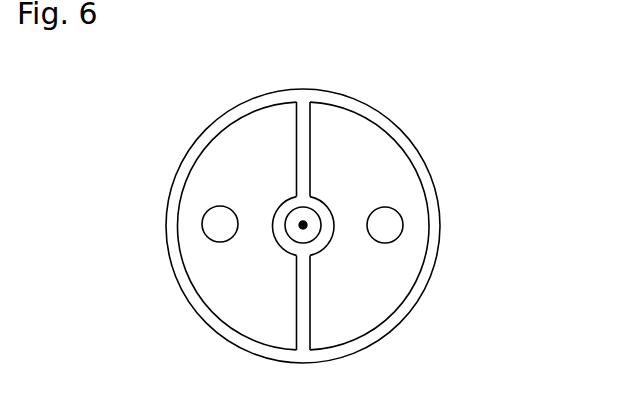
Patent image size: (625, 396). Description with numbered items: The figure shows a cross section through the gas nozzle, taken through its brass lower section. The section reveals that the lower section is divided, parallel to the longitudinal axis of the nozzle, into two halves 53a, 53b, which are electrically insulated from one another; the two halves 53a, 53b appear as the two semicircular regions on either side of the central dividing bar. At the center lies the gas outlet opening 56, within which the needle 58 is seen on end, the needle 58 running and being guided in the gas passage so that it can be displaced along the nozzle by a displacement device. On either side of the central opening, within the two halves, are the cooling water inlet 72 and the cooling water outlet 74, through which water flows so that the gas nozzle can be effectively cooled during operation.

The half of lower section 53a is at (395, 183).
The half of lower section 53b is at (201, 172).
The gas outlet opening 56 is at (315, 233).
The needle 58 is at (295, 238).
The cooling water inlet 72 is at (387, 229).
The cooling water outlet 74 is at (213, 225).